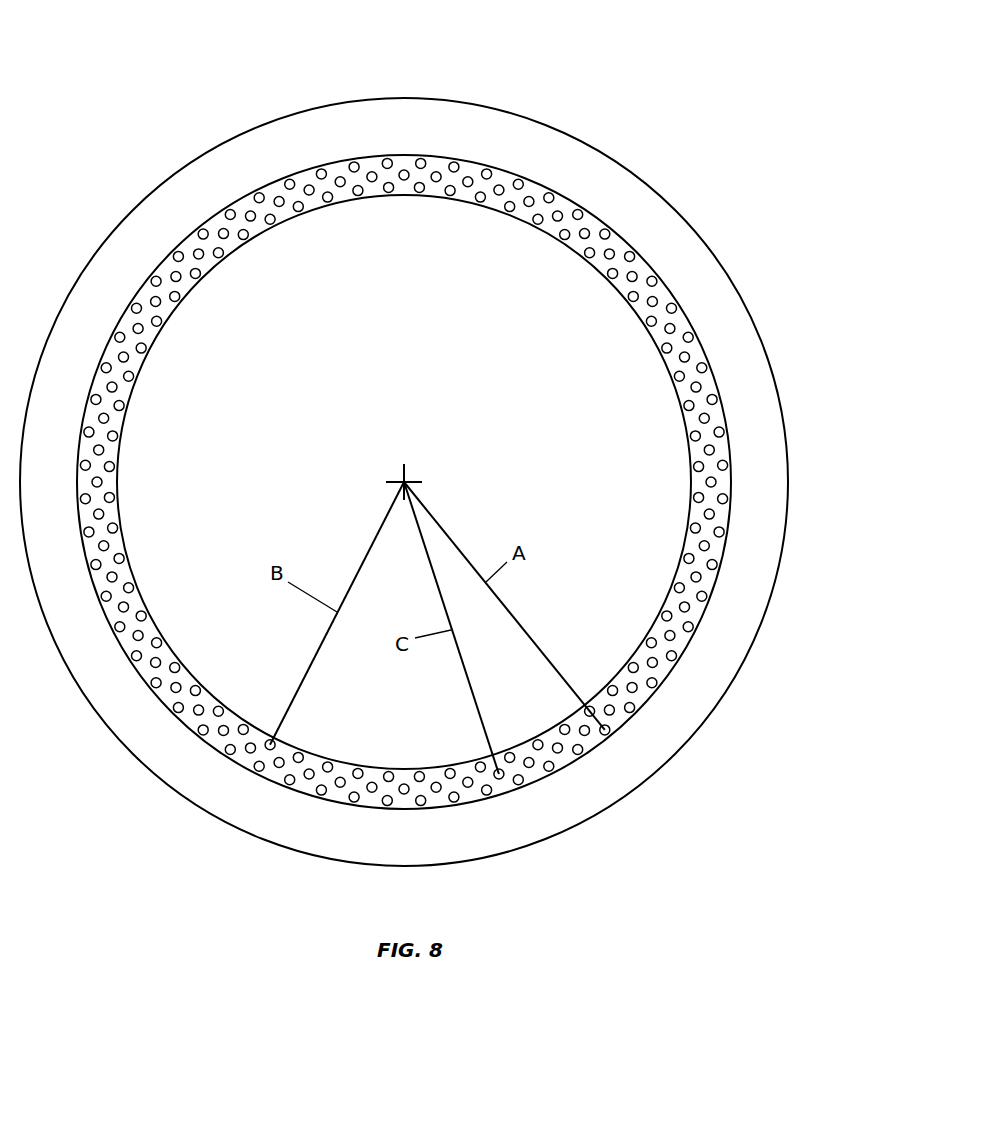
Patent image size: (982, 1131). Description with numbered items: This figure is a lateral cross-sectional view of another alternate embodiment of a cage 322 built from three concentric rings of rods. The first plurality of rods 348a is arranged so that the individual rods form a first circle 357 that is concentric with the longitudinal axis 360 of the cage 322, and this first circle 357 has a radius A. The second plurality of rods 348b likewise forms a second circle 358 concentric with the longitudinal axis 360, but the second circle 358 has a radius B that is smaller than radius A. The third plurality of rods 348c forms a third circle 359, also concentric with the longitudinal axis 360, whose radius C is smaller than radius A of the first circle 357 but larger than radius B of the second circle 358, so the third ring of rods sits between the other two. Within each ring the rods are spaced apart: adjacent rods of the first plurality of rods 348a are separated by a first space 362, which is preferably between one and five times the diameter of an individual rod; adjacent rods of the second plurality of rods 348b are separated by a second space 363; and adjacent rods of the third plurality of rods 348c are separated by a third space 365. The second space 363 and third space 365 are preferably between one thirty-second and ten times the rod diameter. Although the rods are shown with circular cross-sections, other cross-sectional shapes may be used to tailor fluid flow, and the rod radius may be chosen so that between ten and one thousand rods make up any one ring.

The cage 322 is at (577, 85).
The first circle 357 is at (565, 179).
The second circle 358 is at (499, 229).
The third circle 359 is at (619, 292).
The longitudinal axis 360 is at (408, 478).
The first plurality of rods 348a is at (713, 563).
The second plurality of rods 348b is at (695, 529).
The third plurality of rods 348c is at (685, 607).
The first space 362 is at (475, 802).
The second space 363 is at (403, 769).
The third space 365 is at (556, 777).